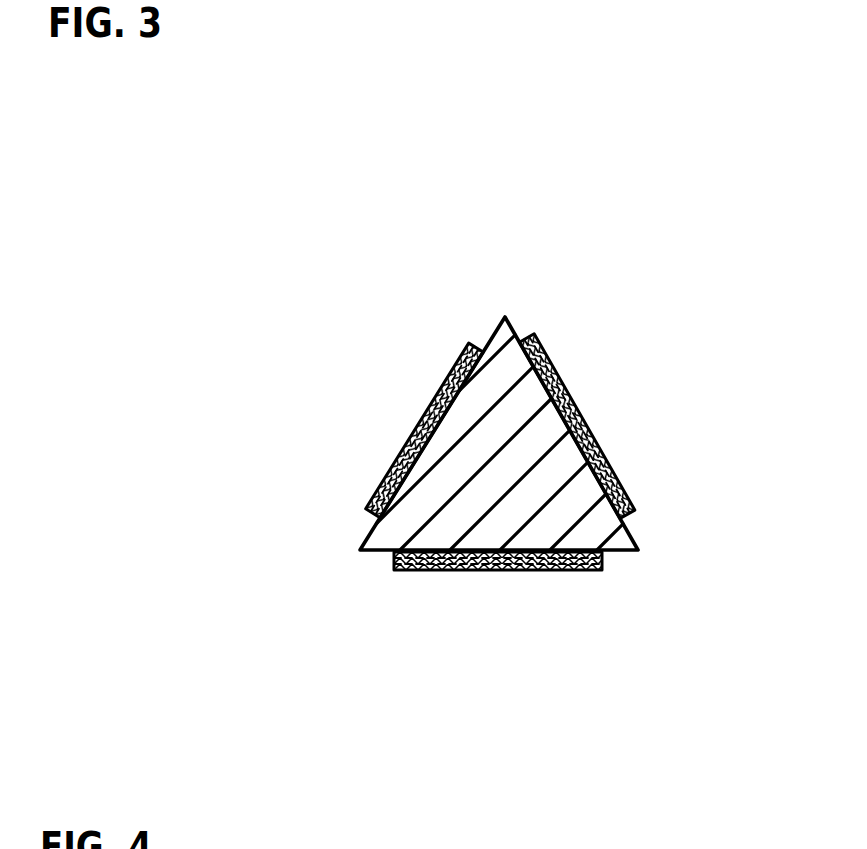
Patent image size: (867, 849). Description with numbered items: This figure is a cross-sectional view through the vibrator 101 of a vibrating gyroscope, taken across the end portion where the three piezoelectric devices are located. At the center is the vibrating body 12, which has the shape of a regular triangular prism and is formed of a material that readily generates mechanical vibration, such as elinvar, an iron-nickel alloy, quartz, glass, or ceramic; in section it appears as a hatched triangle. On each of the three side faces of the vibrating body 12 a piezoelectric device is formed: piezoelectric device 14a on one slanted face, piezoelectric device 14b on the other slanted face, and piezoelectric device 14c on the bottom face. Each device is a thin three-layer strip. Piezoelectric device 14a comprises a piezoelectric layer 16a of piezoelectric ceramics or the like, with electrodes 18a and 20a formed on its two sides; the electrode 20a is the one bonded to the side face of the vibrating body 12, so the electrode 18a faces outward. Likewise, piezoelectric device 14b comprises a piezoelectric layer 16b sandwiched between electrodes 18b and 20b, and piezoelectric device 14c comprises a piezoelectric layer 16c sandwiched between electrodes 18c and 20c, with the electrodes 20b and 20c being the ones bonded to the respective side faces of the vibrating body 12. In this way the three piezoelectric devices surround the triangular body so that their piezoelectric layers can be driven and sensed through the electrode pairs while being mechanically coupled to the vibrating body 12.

The vibrator 101 is at (207, 257).
The vibrating body 12 is at (624, 537).
The piezoelectric device 14a is at (420, 402).
The piezoelectric device 14b is at (584, 398).
The piezoelectric device 14c is at (449, 600).
The piezoelectric layer 16a is at (425, 430).
The piezoelectric layer 16b is at (576, 426).
The piezoelectric layer 16c is at (498, 561).
The electrode 18a is at (429, 433).
The electrode 18b is at (572, 428).
The electrode 18c is at (498, 555).
The electrode 20a is at (457, 334).
The electrode 20b is at (560, 336).
The electrode 20c is at (394, 588).